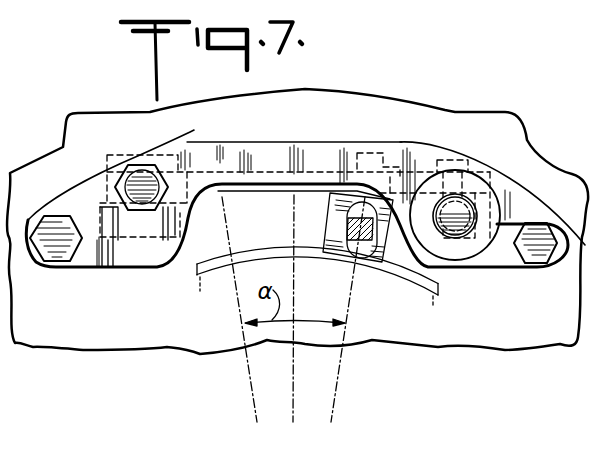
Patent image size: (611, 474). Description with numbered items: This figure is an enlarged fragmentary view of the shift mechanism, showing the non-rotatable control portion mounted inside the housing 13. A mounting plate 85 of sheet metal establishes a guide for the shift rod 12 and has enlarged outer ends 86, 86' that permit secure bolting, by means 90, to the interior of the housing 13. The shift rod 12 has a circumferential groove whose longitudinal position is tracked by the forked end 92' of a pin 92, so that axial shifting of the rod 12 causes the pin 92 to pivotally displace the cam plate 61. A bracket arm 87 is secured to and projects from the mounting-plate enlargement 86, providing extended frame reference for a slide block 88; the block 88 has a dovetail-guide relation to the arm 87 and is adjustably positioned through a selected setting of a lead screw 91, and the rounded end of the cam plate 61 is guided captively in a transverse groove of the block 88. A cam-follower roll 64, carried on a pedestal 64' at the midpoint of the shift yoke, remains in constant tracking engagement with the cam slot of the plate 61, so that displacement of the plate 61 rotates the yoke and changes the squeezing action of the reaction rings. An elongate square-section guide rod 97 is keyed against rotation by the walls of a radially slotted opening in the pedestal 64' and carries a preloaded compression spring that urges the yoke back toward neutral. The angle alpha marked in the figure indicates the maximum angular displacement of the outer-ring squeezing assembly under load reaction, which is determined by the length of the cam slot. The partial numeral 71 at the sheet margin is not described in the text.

The shift rod 12 is at (472, 200).
The housing 13 is at (430, 100).
The cam plate 61 is at (248, 188).
The cam-follower roll 64 is at (365, 152).
The pedestal 64' is at (347, 227).
The base 71 is at (5, 431).
The mounting plate 85 is at (302, 142).
The enlarged outer end 86 is at (106, 286).
The enlarged outer end 86' is at (482, 285).
The bracket arm 87 is at (100, 222).
The slide block 88 is at (110, 167).
The bolting means 90 is at (53, 264).
The lead screw 91 is at (160, 168).
The pin 92 is at (466, 156).
The forked end 92' is at (450, 177).
The guide rod 97 is at (348, 250).